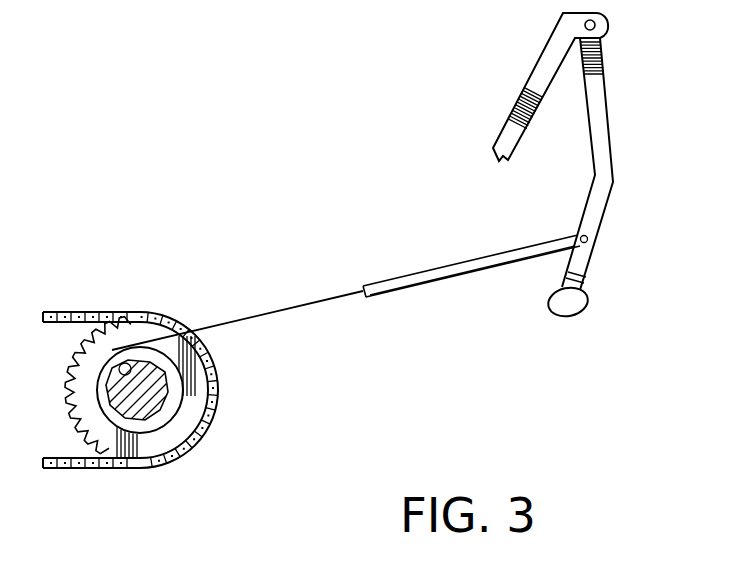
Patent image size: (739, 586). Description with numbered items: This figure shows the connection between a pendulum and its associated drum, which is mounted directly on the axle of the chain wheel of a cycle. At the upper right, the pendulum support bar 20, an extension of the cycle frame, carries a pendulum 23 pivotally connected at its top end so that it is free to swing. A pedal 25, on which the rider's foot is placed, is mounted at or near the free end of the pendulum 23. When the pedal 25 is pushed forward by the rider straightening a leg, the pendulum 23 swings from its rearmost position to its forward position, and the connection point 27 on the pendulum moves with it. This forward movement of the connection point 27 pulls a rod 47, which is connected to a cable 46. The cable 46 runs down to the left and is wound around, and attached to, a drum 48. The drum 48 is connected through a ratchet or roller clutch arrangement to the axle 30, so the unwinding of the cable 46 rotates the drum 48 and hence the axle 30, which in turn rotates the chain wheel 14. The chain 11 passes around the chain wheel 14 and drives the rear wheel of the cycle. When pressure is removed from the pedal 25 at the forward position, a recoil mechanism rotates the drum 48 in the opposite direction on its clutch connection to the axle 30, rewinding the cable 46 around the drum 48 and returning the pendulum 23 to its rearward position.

The chain 11 is at (63, 314).
The chain wheel 14 is at (183, 425).
The pendulum support bar 20 is at (550, 62).
The pendulum 23 is at (600, 97).
The pedal 25 is at (577, 316).
The connection point 27 is at (588, 238).
The axle 30 is at (160, 422).
The cable 46 is at (298, 303).
The rod 47 is at (500, 255).
The drum 48 is at (167, 372).